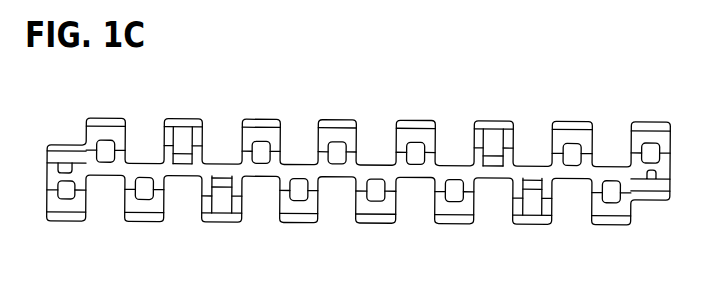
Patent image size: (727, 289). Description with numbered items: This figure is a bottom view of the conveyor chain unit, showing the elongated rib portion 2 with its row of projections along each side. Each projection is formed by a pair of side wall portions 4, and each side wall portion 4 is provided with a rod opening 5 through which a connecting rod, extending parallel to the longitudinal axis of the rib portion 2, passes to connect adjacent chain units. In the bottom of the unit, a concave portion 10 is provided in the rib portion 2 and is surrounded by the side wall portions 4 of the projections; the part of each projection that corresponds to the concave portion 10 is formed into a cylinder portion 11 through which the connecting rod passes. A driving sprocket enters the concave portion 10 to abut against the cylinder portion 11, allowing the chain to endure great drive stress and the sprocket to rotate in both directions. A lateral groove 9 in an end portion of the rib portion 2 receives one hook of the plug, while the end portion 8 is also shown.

The rib portion 2 is at (376, 165).
The side wall portions 4 is at (124, 194).
The rod opening 5 is at (352, 208).
The end portion 8 is at (55, 156).
The lateral groove 9 is at (65, 172).
The concave portion 10 is at (218, 161).
The cylinder portion 11 is at (184, 133).